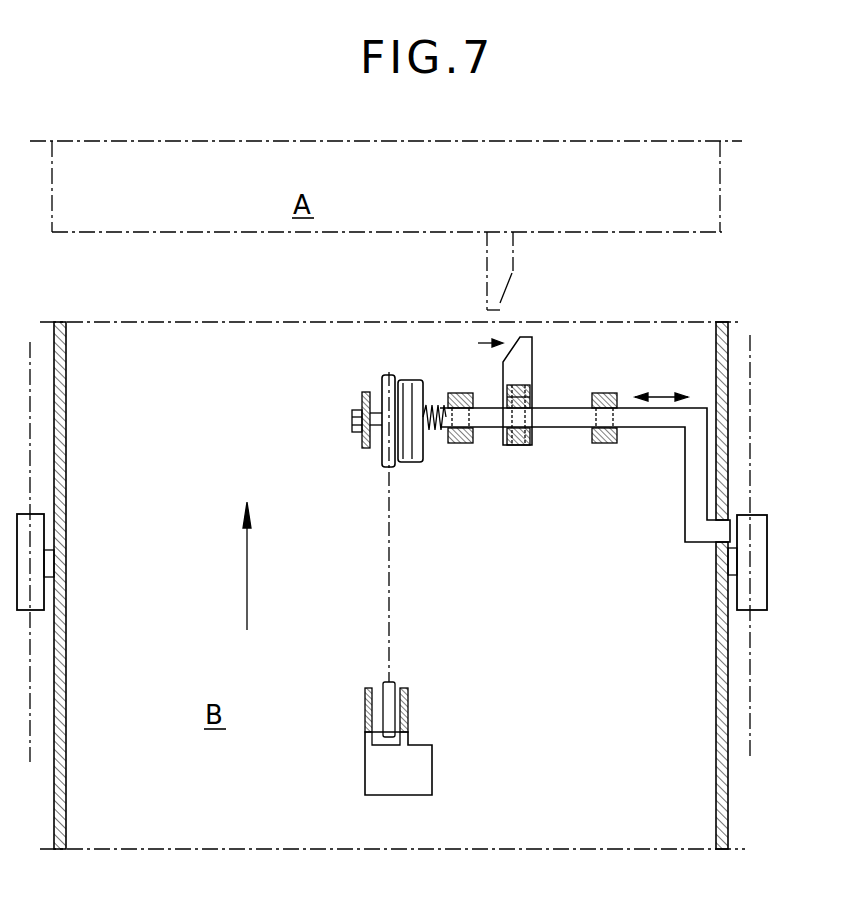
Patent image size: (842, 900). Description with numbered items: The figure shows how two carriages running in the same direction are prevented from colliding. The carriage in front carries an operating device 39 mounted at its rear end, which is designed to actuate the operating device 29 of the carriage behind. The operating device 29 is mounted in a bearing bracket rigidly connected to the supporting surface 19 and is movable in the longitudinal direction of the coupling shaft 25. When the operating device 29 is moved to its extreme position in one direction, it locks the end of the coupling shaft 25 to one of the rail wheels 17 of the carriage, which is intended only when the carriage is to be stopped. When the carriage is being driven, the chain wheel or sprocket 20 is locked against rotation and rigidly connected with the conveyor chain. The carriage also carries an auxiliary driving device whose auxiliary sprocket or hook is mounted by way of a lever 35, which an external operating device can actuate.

The rail wheel 17 is at (740, 585).
The supporting surface 19 is at (722, 775).
The chain wheel or sprocket 20 is at (385, 467).
The coupling shaft 25 is at (632, 415).
The operating device 29 is at (532, 345).
The lever 35 is at (432, 773).
The operating device 39 is at (505, 274).